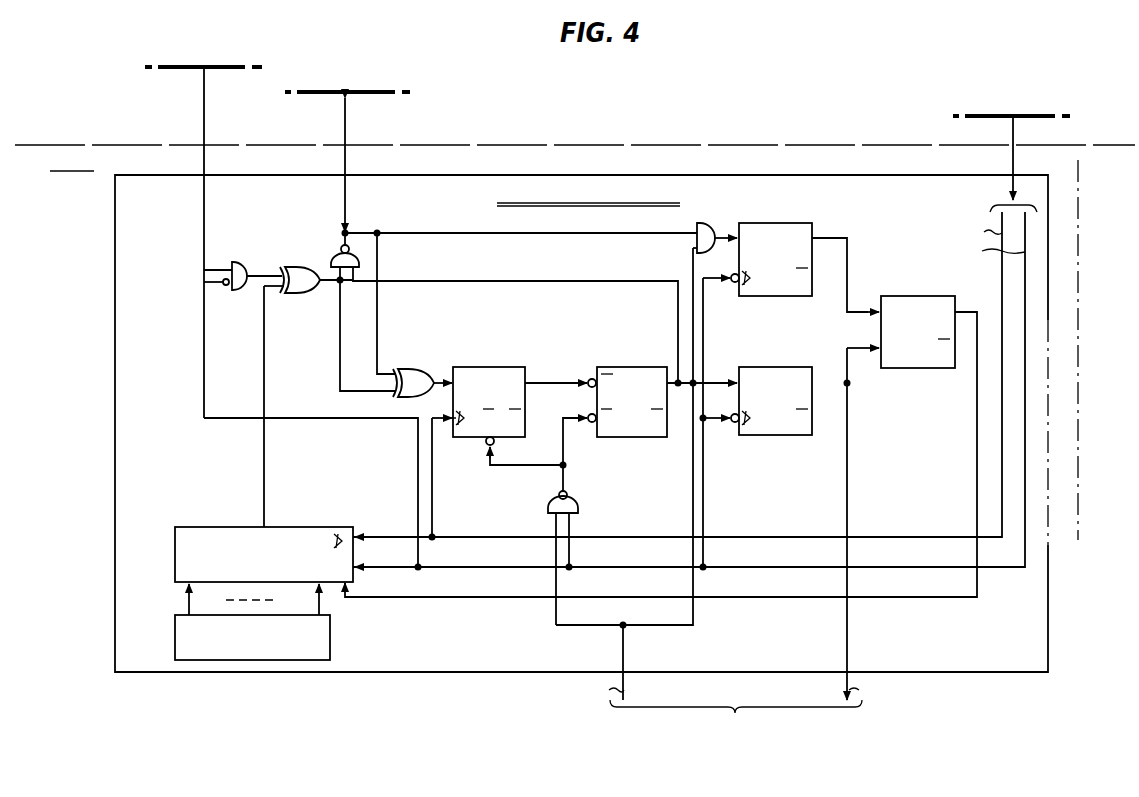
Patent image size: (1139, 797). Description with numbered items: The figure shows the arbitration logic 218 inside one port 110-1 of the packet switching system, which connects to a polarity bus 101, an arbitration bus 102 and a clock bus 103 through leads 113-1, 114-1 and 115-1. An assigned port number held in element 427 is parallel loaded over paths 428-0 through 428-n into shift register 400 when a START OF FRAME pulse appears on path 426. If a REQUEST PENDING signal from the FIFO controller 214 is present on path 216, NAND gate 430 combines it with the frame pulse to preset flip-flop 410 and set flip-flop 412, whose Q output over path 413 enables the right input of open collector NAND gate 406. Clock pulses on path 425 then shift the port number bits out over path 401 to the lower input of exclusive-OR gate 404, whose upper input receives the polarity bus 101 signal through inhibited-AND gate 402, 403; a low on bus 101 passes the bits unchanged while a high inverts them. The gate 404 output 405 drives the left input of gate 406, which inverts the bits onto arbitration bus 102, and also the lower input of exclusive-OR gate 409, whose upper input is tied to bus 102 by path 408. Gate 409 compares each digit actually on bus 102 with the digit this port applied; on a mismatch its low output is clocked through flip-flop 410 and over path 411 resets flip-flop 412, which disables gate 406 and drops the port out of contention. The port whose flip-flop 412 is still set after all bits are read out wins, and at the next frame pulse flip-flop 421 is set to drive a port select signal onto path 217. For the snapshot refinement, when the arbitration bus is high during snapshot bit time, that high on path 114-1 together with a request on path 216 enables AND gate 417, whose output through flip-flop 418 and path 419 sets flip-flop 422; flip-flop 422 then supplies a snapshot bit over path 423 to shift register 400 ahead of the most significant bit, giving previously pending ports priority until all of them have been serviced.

The polarity bus 101 is at (238, 66).
The arbitration bus 102 is at (385, 92).
The clock bus 103 is at (972, 113).
The port 110-1 is at (100, 142).
The path 113-1 is at (204, 110).
The path 114-1 is at (345, 116).
The clock bus lead 115-1 is at (1013, 133).
The FIFO controller 214 is at (736, 741).
The path 216 is at (623, 690).
The path 217 is at (845, 691).
The arbitration logic 218 is at (614, 176).
The shift register 400 is at (216, 526).
The path 401 is at (264, 506).
The inhibited-AND gate 402 is at (240, 290).
The AND gate 403 is at (255, 262).
The exclusive-OR gate 404 is at (293, 270).
The exclusive OR gate output lead 405 is at (332, 284).
The open collector NAND gate 406 is at (340, 248).
The arbitration bus lead to XOR gate 408 is at (378, 310).
The exclusive-OR gate 409 is at (418, 362).
The flip-flop 410 is at (502, 365).
The path 411 is at (553, 378).
The flip-flop 412 is at (654, 366).
The path 413 is at (678, 366).
The AND gate 417 is at (709, 223).
The flip-flop 418 is at (792, 219).
The path 419 is at (829, 234).
The flip-flop 421 is at (792, 363).
The flip-flop 422 is at (934, 299).
The path 423 is at (969, 310).
The path 425 is at (1002, 423).
The path 426 is at (1025, 449).
The port number element 427 is at (330, 638).
The path 428-0 is at (188, 601).
The path 428-n is at (319, 603).
The NAND gate 430 is at (567, 497).